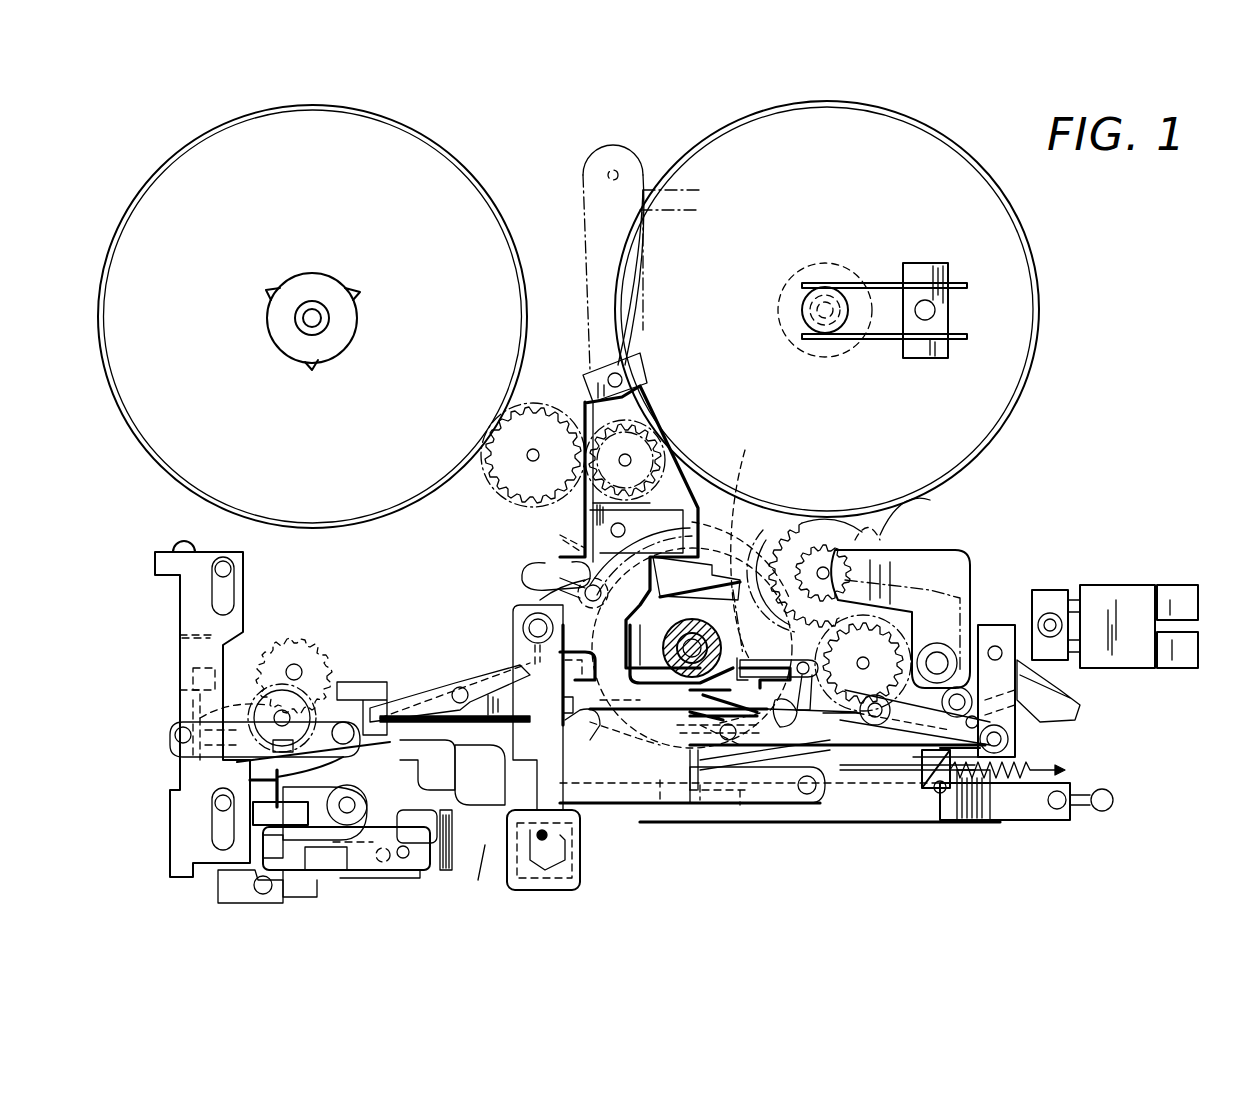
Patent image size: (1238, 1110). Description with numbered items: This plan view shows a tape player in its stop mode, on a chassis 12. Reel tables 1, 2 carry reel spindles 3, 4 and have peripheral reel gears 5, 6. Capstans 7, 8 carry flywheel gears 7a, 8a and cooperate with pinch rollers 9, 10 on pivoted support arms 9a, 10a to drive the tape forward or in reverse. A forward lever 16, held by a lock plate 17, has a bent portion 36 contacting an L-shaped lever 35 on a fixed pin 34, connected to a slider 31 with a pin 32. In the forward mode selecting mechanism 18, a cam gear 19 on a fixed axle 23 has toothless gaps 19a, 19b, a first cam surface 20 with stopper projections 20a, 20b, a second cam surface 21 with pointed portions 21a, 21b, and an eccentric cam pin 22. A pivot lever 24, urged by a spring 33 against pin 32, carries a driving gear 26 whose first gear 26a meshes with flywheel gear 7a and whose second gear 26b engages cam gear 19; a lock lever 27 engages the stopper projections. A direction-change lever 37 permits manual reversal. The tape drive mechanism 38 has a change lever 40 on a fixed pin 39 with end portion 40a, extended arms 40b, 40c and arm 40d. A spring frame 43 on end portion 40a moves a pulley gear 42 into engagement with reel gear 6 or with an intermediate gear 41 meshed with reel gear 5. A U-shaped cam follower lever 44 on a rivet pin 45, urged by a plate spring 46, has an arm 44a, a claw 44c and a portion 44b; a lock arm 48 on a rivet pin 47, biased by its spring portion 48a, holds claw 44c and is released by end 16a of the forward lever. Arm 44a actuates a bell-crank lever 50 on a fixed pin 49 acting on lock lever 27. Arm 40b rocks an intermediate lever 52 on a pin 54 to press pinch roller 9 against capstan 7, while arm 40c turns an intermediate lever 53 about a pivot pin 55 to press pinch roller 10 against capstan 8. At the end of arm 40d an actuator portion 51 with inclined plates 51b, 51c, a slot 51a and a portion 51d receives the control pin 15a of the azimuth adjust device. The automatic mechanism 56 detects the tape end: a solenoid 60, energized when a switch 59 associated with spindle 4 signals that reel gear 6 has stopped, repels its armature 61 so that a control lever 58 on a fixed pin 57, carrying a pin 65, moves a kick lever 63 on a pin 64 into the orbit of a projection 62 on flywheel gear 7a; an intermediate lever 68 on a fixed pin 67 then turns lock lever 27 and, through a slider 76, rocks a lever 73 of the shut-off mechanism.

The reel table 1 is at (156, 180).
The reel table 2 is at (969, 175).
The reel spindle 3 is at (318, 290).
The reel spindle 4 is at (832, 275).
The reel gear 5 is at (490, 232).
The reel gear 6 is at (1015, 243).
The capstan 7 is at (912, 580).
The flywheel gear 7a is at (940, 567).
The capstan 8 is at (294, 660).
The flywheel gear 8a is at (302, 650).
The pinch roller 9 is at (863, 760).
The pivoted support arm 9a is at (910, 765).
The pinch roller 10 is at (270, 690).
The pivoted support arm 10a is at (262, 700).
The chassis 12 is at (1115, 475).
The control pin 15a is at (505, 858).
The forward lever 16 is at (185, 620).
The end of arm of forward lever 16a is at (365, 680).
The lock plate 17 is at (200, 706).
The forward mode selecting mechanism 18 is at (705, 836).
The cam gear 19 is at (706, 552).
The toothless portion 19a is at (745, 535).
The toothless portion 19b is at (655, 740).
The first cam surface 20 is at (790, 540).
The stopper projection 20a is at (588, 558).
The stopper projection 20b is at (738, 703).
The second cam surface 21 is at (650, 812).
The pointed surface portion 21a is at (675, 815).
The pointed surface portion 21b is at (740, 480).
The cam pin 22 is at (628, 640).
The fixed axle 23 is at (720, 640).
The pivot lever 24 is at (882, 622).
The driving gear 26 is at (868, 452).
The first gear 26a is at (868, 540).
The second gear 26b is at (895, 530).
The lock lever 27 is at (792, 800).
The slider 31 is at (1003, 814).
The pin 32 is at (943, 792).
The spring 33 is at (1035, 810).
The fixed pin 34 is at (390, 870).
The L-shaped lever 35 is at (400, 880).
The bent portion 36 is at (320, 882).
The direction-change lever 37 is at (270, 897).
The tape drive mechanism 38 is at (487, 588).
The fixed pin 39 is at (520, 625).
The change lever 40 is at (515, 690).
The end portion of change lever 40a is at (540, 600).
The extended arm 40b is at (603, 718).
The extended arm 40c is at (460, 745).
The arm of change lever 40d is at (500, 812).
The intermediate gear 41 is at (552, 430).
The pulley gear 42 is at (660, 425).
The spring frame 43 is at (600, 375).
The cam follower lever 44 is at (672, 500).
The arm of cam follower lever 44a is at (750, 684).
The lever portion 44b is at (625, 532).
The claw 44c is at (610, 715).
The rivet pin 45 is at (602, 595).
The plate spring 46 is at (545, 565).
The rivet pin 47 is at (456, 689).
The lock arm 48 is at (420, 700).
The extended spring portion 48a is at (510, 735).
The fixed pin 49 is at (862, 709).
The bell-crank lever 50 is at (795, 665).
The actuator portion 51 is at (540, 882).
The slot 51a is at (580, 880).
The inclined plate 51b is at (522, 840).
The inclined plate 51c is at (572, 848).
The block portion 51d is at (530, 882).
The intermediate lever 52 is at (770, 810).
The intermediate lever 53 is at (345, 795).
The pin 54 is at (805, 800).
The pivot pin 55 is at (343, 720).
The automatic mechanism 56 is at (1163, 730).
The fixed pin 57 is at (1025, 772).
The control lever 58 is at (1000, 630).
The switch 59 is at (925, 270).
The solenoid 60 is at (1137, 593).
The armature 61 is at (1068, 660).
The projection 62 is at (935, 643).
The kick lever 63 is at (985, 625).
The pin 64 is at (1070, 702).
The pin 65 is at (980, 808).
The fixed pin 67 is at (1010, 745).
The intermediate lever 68 is at (1060, 725).
The lever 73 is at (440, 875).
The slider 76 is at (700, 806).